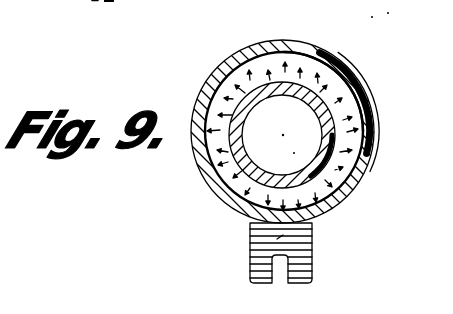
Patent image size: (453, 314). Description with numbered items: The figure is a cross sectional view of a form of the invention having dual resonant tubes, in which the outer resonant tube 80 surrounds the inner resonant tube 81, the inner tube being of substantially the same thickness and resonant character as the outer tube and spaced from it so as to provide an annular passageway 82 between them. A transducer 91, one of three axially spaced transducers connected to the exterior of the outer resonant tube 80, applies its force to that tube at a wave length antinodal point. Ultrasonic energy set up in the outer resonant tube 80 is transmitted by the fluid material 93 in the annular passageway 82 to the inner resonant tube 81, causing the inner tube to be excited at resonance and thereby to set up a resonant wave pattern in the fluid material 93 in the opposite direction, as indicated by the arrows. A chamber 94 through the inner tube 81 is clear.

The outer resonant tube 80 is at (361, 182).
The inner resonant tube 81 is at (216, 180).
The annular passageway 82 is at (327, 72).
The transducer 91 is at (262, 240).
The fluid material 93 is at (297, 67).
The chamber 94 is at (280, 100).